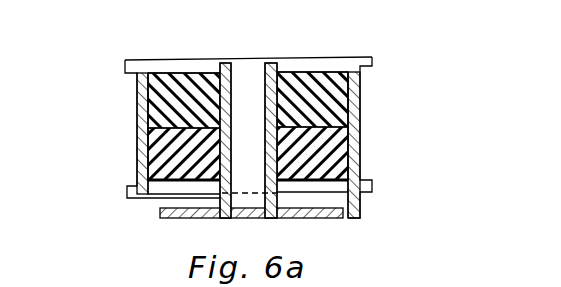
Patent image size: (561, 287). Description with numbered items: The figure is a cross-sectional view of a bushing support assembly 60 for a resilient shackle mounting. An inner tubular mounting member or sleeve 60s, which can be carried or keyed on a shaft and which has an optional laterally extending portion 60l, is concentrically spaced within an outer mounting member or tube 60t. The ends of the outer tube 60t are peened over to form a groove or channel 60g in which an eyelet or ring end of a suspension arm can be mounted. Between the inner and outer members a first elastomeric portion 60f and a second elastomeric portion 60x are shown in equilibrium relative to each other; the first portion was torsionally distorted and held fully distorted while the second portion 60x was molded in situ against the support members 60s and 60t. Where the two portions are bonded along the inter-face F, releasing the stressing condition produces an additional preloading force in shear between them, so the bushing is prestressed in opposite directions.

The bushing support assembly 60 is at (137, 85).
The upper elastic block 60f is at (171, 80).
The inner tubular mounting member 60s is at (246, 78).
The outer mounting member or tube 60t is at (360, 89).
The groove or channel 60g is at (137, 178).
The second elastomeric portion 60x is at (170, 174).
The laterally extending portion 60l is at (318, 218).
The inter-face F is at (148, 118).